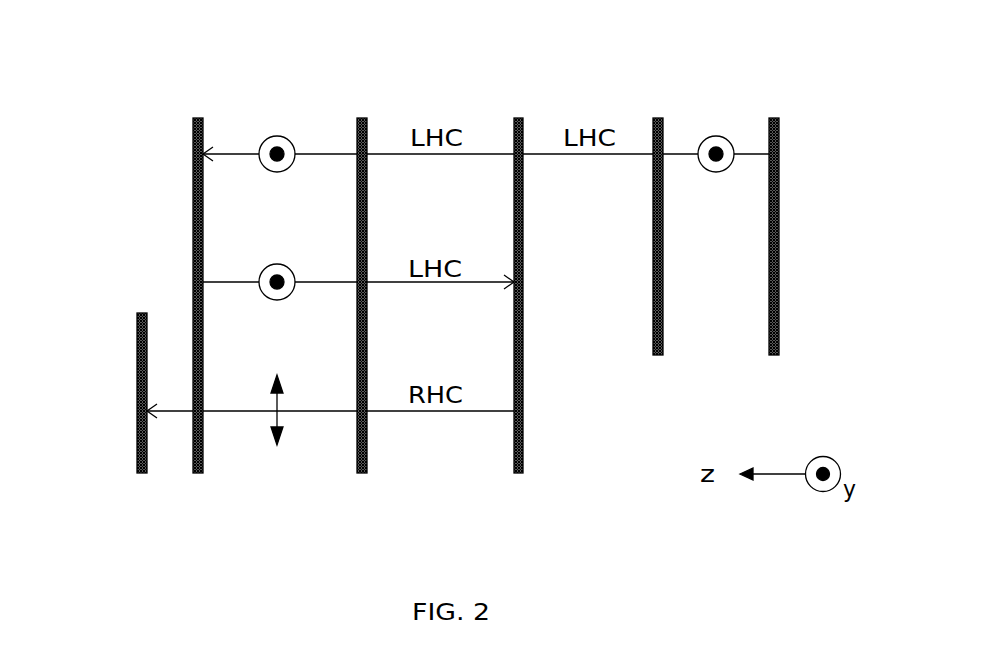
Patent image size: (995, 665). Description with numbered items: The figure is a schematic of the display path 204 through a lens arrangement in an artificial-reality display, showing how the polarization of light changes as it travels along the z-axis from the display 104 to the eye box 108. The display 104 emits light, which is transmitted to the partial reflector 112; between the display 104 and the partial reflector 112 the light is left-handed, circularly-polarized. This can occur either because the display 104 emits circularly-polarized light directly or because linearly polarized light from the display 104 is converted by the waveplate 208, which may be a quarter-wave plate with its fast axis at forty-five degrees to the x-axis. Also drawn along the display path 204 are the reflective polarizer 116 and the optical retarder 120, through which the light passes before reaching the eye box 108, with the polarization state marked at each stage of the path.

The display 104 is at (779, 118).
The eye box 108 is at (137, 372).
The partial reflector 112 is at (523, 117).
The reflective polarizer 116 is at (202, 117).
The optical retarder 120 is at (366, 117).
The display path 204 is at (220, 411).
The waveplate 208 is at (662, 117).